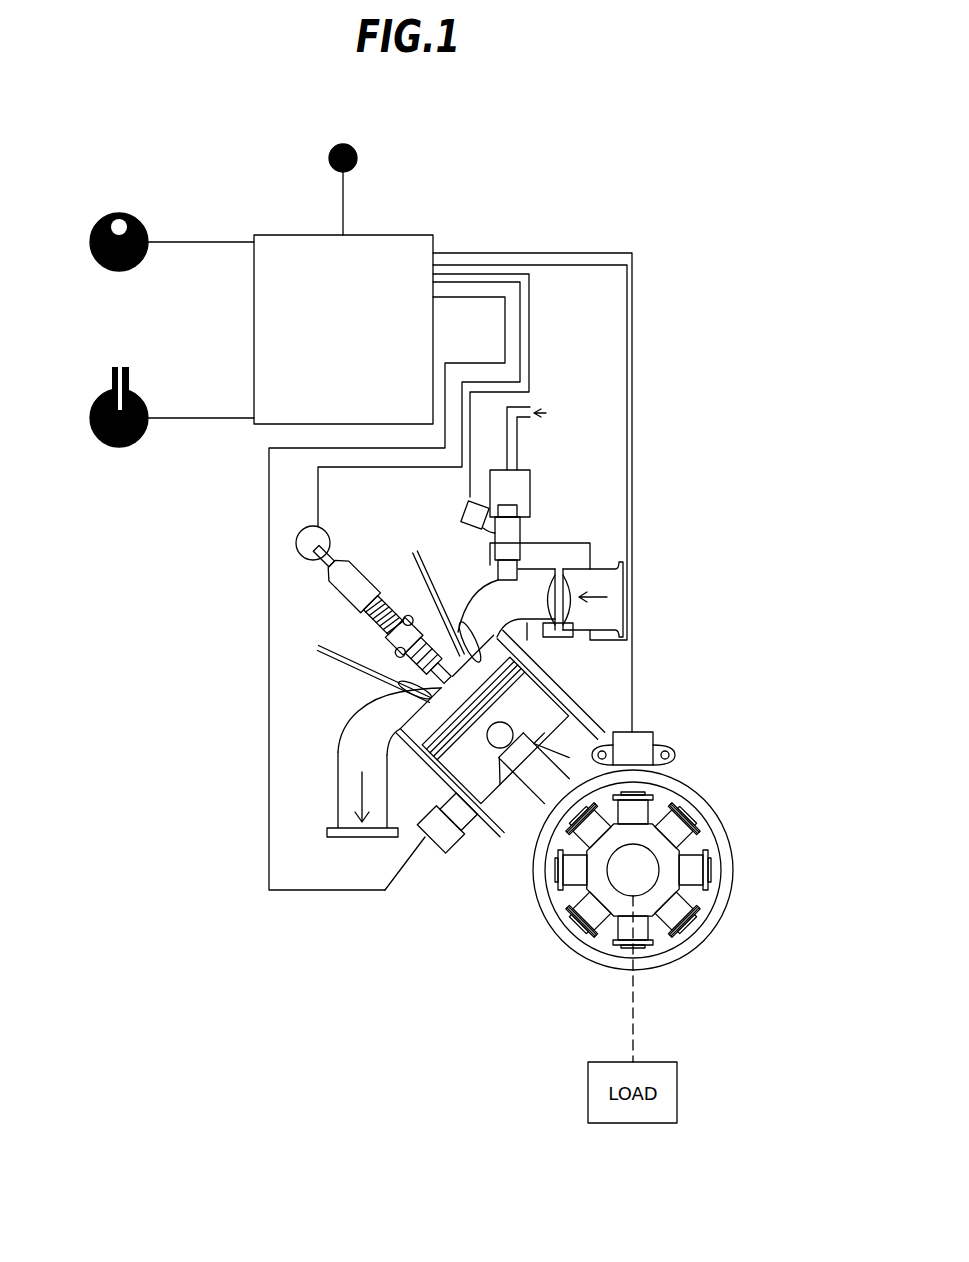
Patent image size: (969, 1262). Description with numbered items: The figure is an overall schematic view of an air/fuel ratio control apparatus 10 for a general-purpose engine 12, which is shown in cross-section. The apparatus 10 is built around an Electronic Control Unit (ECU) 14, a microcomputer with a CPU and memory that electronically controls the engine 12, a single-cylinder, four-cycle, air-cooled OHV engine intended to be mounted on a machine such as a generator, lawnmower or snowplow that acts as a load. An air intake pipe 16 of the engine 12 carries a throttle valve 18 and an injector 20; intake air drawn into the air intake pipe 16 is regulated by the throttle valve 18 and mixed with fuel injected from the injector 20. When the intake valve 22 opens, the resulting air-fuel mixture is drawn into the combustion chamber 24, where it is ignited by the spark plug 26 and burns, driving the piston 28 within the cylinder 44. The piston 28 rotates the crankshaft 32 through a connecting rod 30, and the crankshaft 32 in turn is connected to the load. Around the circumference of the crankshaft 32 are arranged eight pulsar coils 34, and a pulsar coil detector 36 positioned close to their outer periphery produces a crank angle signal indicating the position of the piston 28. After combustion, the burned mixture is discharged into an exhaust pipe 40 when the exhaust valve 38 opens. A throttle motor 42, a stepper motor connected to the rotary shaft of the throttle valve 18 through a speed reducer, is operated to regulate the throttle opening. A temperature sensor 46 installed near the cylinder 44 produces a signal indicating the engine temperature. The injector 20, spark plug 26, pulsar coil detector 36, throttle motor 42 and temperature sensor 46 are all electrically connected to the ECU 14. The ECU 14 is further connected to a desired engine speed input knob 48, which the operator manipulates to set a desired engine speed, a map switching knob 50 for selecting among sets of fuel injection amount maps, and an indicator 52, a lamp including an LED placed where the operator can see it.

The air/fuel ratio control apparatus 10 is at (472, 201).
The general-purpose engine 12 is at (487, 923).
The Electronic Control Unit (ECU) 14 is at (387, 234).
The air intake pipe 16 is at (602, 568).
The throttle valve 18 is at (573, 582).
The injector 20 is at (530, 505).
The intake valve 22 is at (475, 643).
The combustion chamber 24 is at (413, 747).
The spark plug 26 is at (400, 665).
The piston 28 is at (550, 680).
The connecting rod 30 is at (567, 733).
The crankshaft 32 is at (645, 868).
The pulsar coils 34 is at (695, 900).
The pulsar coil detector 36 is at (653, 731).
The exhaust valve 38 is at (407, 708).
The exhaust pipe 40 is at (348, 730).
The throttle motor 42 is at (558, 640).
The cylinder 44 is at (440, 820).
The temperature sensor 46 is at (445, 838).
The desired engine speed input knob 48 is at (90, 242).
The map switching knob 50 is at (90, 418).
The indicator 52 is at (353, 149).